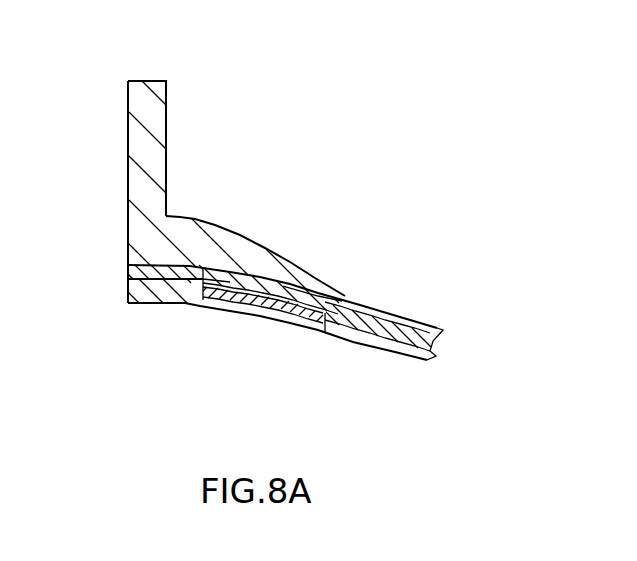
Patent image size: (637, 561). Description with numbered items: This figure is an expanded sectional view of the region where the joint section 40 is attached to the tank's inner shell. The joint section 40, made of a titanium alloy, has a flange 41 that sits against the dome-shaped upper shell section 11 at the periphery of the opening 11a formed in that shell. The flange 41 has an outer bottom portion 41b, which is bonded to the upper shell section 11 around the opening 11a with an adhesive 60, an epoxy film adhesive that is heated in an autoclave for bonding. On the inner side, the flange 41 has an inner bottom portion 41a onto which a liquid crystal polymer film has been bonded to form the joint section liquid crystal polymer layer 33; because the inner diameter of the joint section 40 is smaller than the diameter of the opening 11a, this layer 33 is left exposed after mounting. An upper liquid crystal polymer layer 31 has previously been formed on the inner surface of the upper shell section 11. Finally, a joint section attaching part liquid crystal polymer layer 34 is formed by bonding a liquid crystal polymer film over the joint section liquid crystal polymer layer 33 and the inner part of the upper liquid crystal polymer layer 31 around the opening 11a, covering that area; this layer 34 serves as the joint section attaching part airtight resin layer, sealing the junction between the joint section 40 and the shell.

The upper shell section 11 is at (405, 327).
The opening 11a is at (186, 284).
The upper liquid crystal polymer layer 31 is at (357, 325).
The joint section liquid crystal polymer layer 33 is at (150, 303).
The joint section attaching part liquid crystal polymer layer 34 is at (264, 300).
The joint section 40 is at (157, 123).
The flange 41 is at (187, 230).
The inner bottom portion 41a is at (134, 270).
The outer bottom portion 41b is at (299, 305).
The adhesive 60 is at (290, 284).